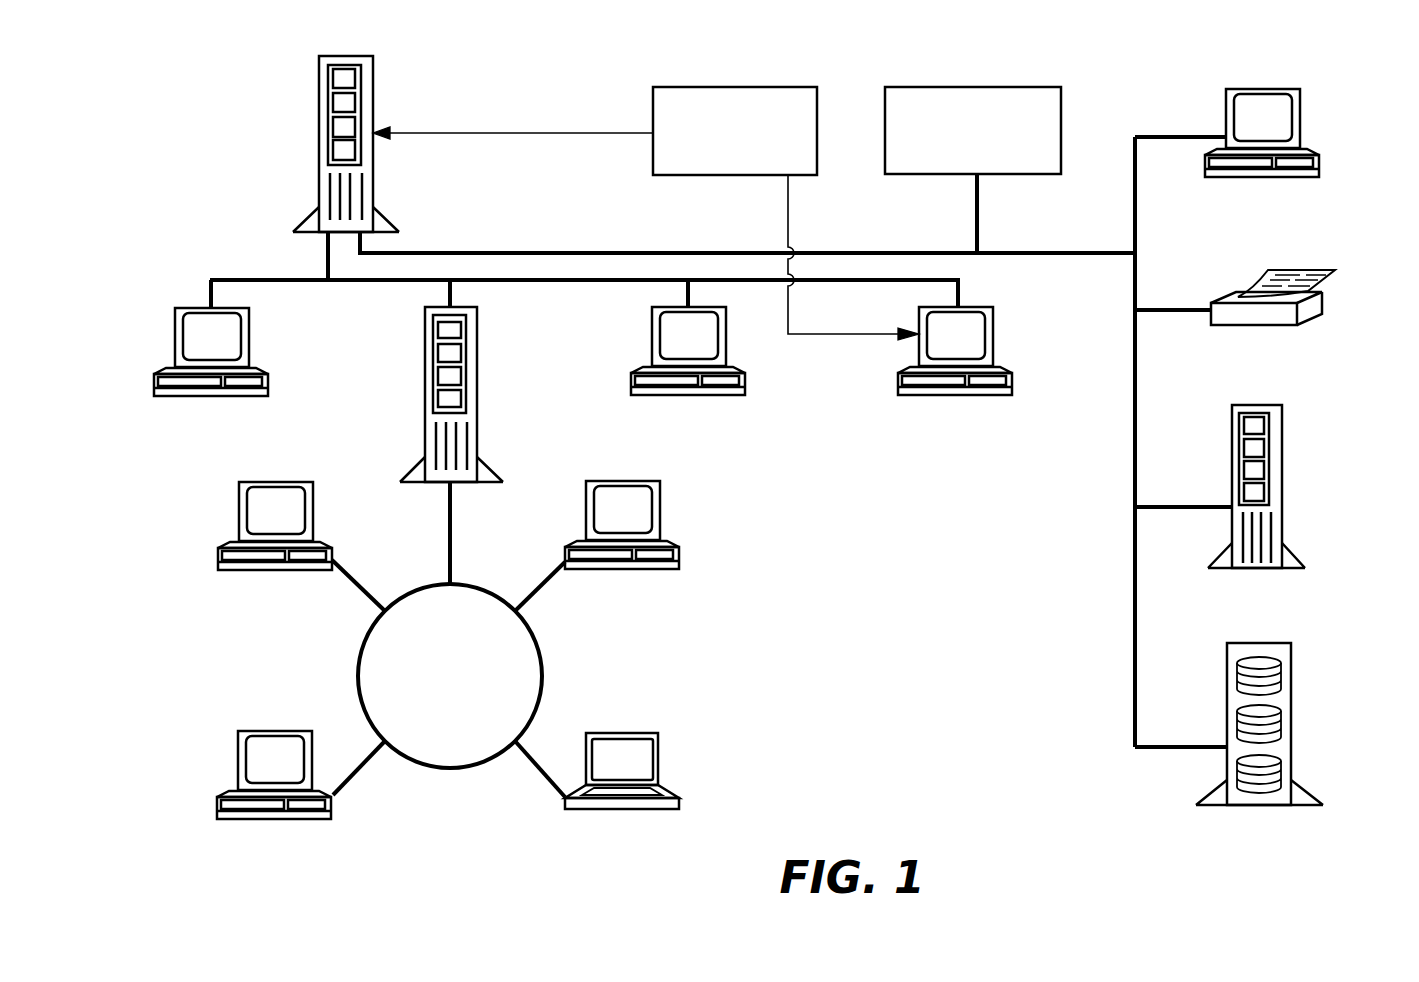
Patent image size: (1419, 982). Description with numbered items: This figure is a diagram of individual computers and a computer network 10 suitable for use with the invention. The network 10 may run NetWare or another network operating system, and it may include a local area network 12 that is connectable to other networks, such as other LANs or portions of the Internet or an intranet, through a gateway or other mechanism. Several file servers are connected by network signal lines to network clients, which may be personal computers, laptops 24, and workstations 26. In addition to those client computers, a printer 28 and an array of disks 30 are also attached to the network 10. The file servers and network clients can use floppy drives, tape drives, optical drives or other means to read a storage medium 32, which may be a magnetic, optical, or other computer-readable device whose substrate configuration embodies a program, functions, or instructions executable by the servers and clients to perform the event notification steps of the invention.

The computer network 10 is at (248, 160).
The local area network 12 is at (290, 283).
The laptop 24 is at (672, 752).
The workstation 26 is at (1302, 486).
The printer 28 is at (1325, 297).
The array of disks 30 is at (1291, 720).
The storage medium 32 is at (725, 87).